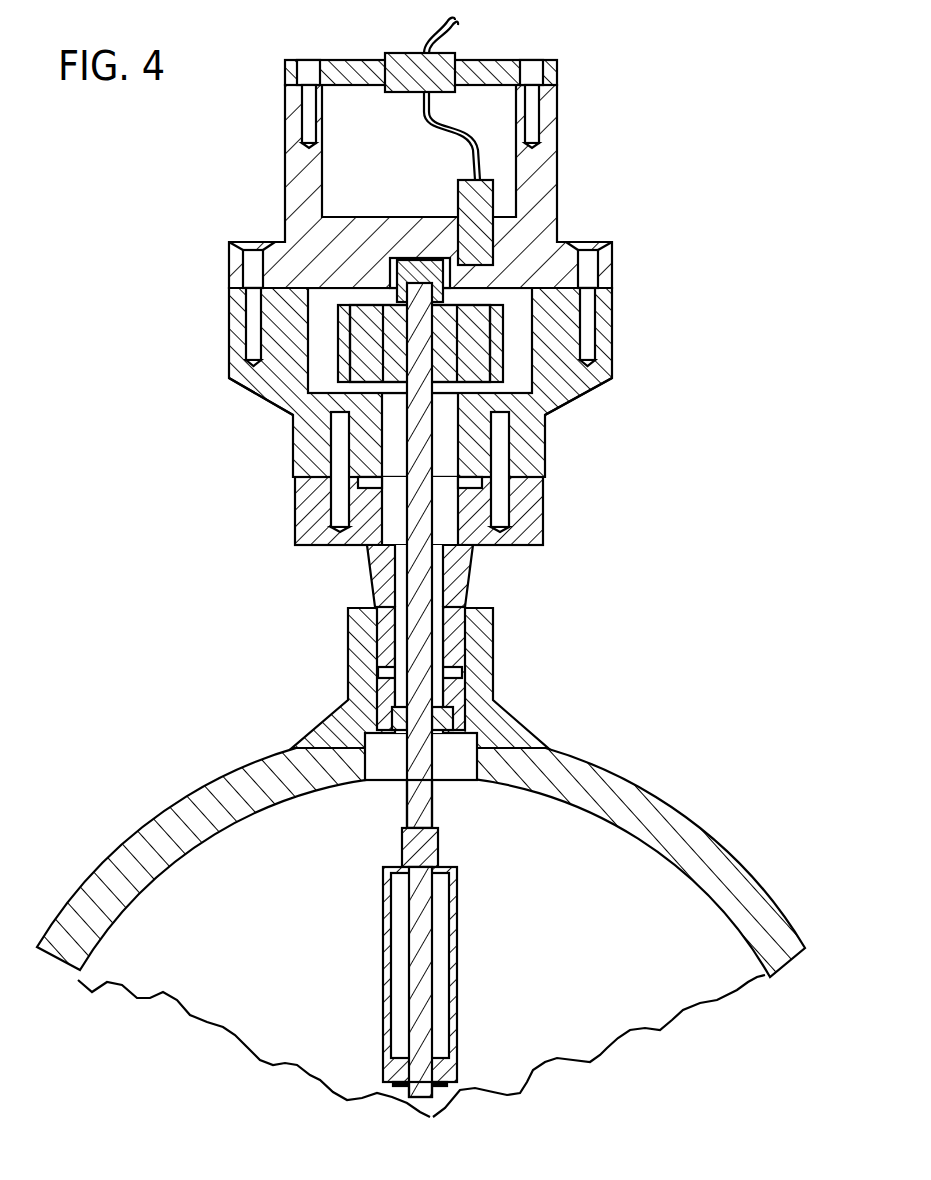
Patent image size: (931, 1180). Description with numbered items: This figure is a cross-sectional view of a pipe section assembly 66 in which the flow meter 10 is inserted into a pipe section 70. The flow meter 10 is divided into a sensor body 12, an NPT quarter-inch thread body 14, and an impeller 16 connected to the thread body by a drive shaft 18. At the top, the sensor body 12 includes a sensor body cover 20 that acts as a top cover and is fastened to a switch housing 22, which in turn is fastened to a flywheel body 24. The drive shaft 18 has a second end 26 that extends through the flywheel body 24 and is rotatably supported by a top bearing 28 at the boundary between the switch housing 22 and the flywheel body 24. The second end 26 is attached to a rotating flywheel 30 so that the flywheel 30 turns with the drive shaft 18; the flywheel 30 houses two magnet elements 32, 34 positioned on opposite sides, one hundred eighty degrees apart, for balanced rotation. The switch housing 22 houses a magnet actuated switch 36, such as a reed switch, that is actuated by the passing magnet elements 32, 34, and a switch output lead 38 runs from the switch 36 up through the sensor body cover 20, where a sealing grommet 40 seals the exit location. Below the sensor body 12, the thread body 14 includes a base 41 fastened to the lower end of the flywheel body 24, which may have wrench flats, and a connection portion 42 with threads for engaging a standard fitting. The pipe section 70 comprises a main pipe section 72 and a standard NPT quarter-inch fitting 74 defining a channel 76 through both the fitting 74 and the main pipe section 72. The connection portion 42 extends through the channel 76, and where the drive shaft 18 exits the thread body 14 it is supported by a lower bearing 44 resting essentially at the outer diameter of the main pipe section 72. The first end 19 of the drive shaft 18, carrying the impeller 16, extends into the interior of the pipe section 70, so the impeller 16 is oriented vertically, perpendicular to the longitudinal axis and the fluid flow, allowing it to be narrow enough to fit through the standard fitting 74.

The flow meter 10 is at (390, 570).
The sensor body 12 is at (229, 305).
The NPT ¼" thread body 14 is at (473, 575).
The impeller 16 is at (383, 965).
The drive shaft 18 is at (434, 803).
The first end 19 is at (430, 1098).
The sensor body cover 20 is at (348, 60).
The switch housing 22 is at (558, 205).
The flywheel body 24 is at (575, 393).
The second end 26 is at (400, 295).
The top bearing 28 is at (402, 292).
The flywheel 30 is at (533, 370).
The magnet element 32 is at (484, 334).
The magnet element 34 is at (353, 363).
The magnet actuated switch 36 is at (493, 192).
The switch output lead 38 is at (460, 122).
The sealing grommet 40 is at (402, 53).
The base 41 is at (545, 507).
The connection portion 42 is at (455, 633).
The lower bearing 44 is at (440, 742).
The pipe section assembly 66 is at (467, 190).
The pipe section 70 is at (421, 910).
The main pipe section 72 is at (610, 768).
The standard NPT ¼" fitting 74 is at (494, 660).
The channel 76 is at (390, 763).